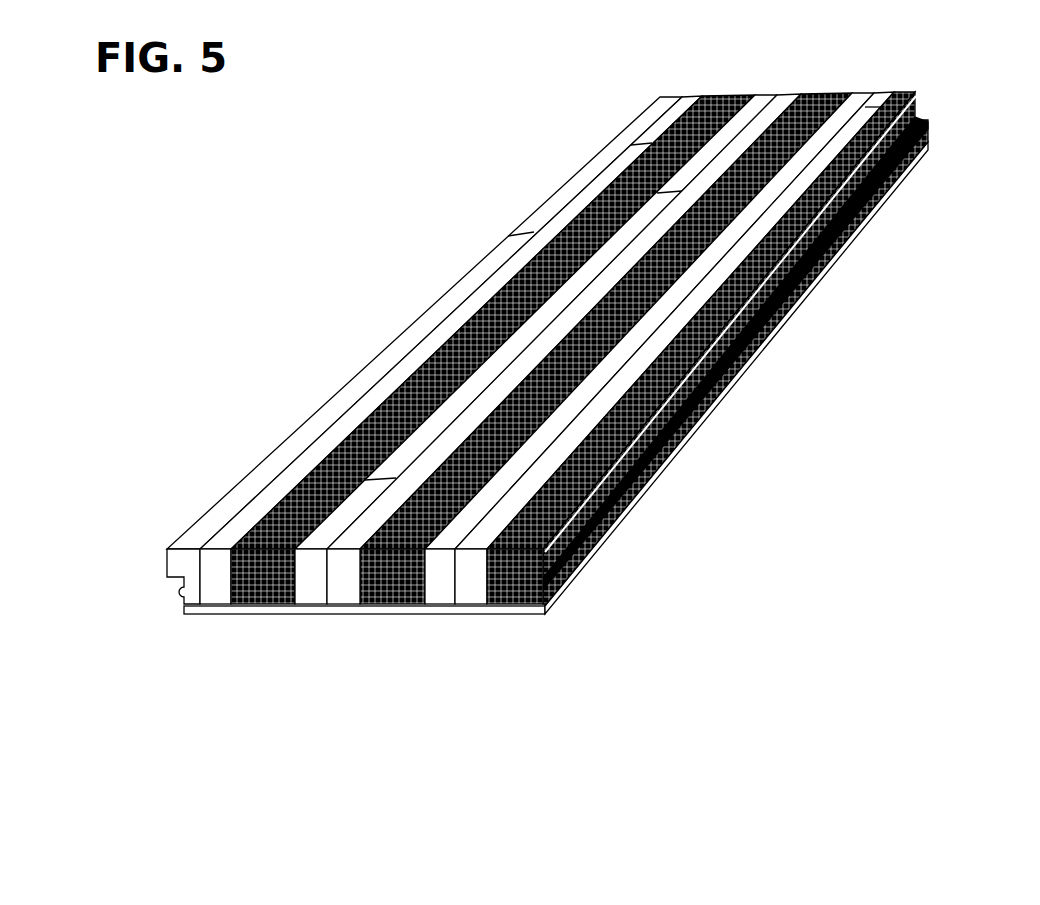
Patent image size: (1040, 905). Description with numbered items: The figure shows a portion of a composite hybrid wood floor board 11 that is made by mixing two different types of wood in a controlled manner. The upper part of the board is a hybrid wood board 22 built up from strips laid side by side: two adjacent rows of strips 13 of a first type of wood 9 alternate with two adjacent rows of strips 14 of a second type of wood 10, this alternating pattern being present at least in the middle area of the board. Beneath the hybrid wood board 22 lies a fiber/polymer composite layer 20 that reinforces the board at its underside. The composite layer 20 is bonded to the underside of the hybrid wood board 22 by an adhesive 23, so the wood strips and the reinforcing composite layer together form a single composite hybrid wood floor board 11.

The first type of wood 9 is at (812, 92).
The second type of wood 10 is at (770, 101).
The composite hybrid wood floor board 11 is at (768, 447).
The strips of a first type of wood 13 is at (252, 638).
The strips of a second type of wood 14 is at (317, 635).
The fiber/polymer composite layer 20 is at (517, 608).
The hybrid wood board 22 is at (428, 265).
The adhesive 23 is at (838, 253).